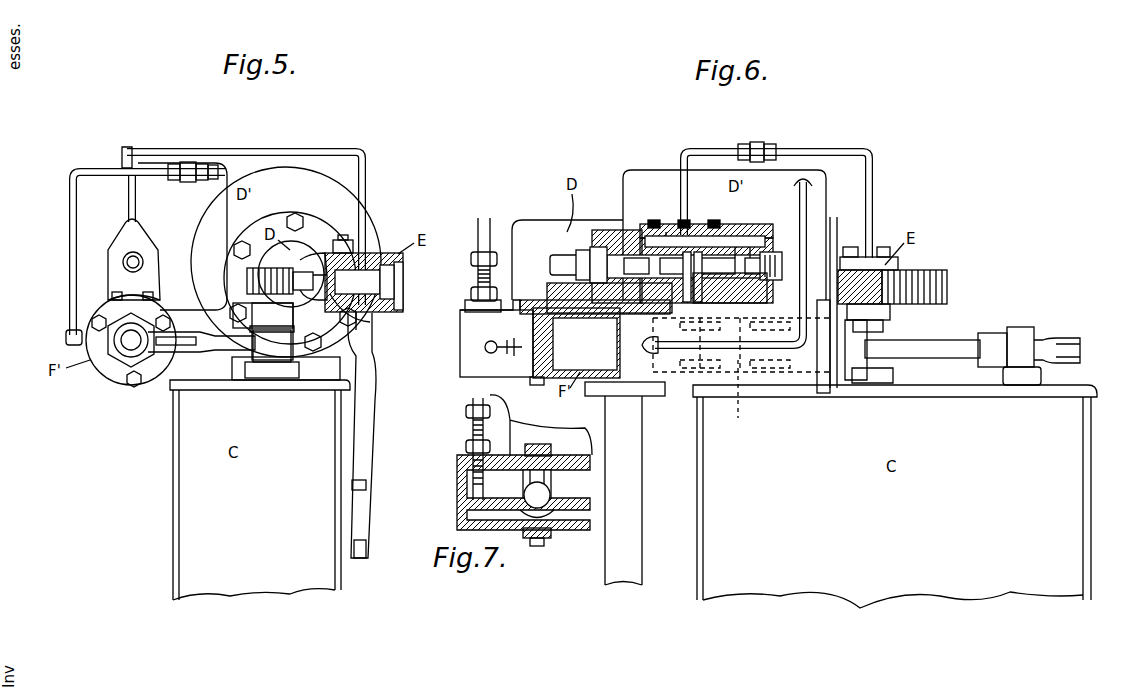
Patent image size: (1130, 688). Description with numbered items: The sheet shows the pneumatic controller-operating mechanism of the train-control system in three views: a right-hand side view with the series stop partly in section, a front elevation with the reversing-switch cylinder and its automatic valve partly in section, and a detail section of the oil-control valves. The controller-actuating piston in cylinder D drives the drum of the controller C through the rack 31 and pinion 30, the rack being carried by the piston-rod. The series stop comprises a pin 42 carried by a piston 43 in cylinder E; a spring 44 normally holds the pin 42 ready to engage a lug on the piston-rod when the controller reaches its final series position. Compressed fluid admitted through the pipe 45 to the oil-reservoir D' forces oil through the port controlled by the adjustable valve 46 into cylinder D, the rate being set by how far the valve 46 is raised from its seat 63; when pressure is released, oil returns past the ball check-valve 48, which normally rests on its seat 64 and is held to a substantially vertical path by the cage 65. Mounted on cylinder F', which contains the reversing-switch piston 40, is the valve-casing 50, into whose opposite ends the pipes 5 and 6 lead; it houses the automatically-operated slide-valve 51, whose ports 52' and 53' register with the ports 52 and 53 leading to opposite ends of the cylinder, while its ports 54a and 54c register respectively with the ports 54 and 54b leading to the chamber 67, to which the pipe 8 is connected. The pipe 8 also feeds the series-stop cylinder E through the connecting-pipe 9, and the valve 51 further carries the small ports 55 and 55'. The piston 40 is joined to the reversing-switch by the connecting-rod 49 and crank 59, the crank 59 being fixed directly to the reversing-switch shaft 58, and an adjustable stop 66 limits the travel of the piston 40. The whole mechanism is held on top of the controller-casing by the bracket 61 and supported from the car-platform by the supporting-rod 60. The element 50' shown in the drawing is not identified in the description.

In FIG. 6, the pipe 5 is at (566, 255).
In FIG. 5, the pipe 6 is at (143, 258).
In FIG. 6, the pipe 6 is at (790, 262).
In FIG. 5, the pipe 8 is at (292, 152).
In FIG. 6, the pipe 8 is at (798, 153).
In FIG. 5, the connecting-pipe 9 is at (366, 190).
In FIG. 6, the connecting-pipe 9 is at (873, 188).
In FIG. 5, the pinion 30 is at (247, 281).
In FIG. 6, the pinion 30 is at (882, 302).
In FIG. 5, the rack 31 is at (360, 332).
In FIG. 6, the rack 31 is at (948, 285).
In FIG. 6, the piston 40 is at (747, 396).
In FIG. 5, the pin 42 is at (372, 312).
In FIG. 5, the piston 43 is at (372, 258).
In FIG. 5, the spring 44 is at (404, 274).
In FIG. 5, the pipe 45 is at (71, 236).
In FIG. 6, the pipe 45 is at (800, 200).
In FIG. 6, the adjustable valve 46 is at (474, 282).
In FIG. 7, the adjustable valve 46 is at (472, 434).
In FIG. 7, the check-valve 48 is at (560, 516).
In FIG. 5, the connecting-rod 49 is at (120, 348).
In FIG. 6, the connecting-rod 49 is at (950, 344).
In FIG. 5, the valve-casing 50 is at (143, 238).
In FIG. 6, the valve body end 50' is at (617, 250).
In FIG. 6, the slide-valve 51 is at (640, 297).
In FIG. 6, the port 52 is at (609, 311).
In FIG. 6, the port 52' is at (691, 250).
In FIG. 6, the port 53 is at (730, 297).
In FIG. 6, the port 53' is at (777, 246).
In FIG. 6, the port 54 is at (654, 222).
In FIG. 6, the port 54a is at (668, 232).
In FIG. 6, the port 54b is at (735, 240).
In FIG. 6, the port 54c is at (750, 244).
In FIG. 6, the small port 55 is at (677, 277).
In FIG. 6, the small port 55' is at (708, 277).
In FIG. 5, the shaft 58 is at (262, 362).
In FIG. 6, the shaft 58 is at (1022, 332).
In FIG. 5, the crank 59 is at (180, 362).
In FIG. 6, the crank 59 is at (1072, 338).
In FIG. 6, the supporting-rod 60 is at (635, 441).
In FIG. 5, the bracket 61 is at (365, 422).
In FIG. 7, the seat 63 is at (462, 492).
In FIG. 7, the seat 64 is at (526, 522).
In FIG. 7, the cage 65 is at (556, 458).
In FIG. 6, the adjustable stop 66 is at (470, 352).
In FIG. 6, the chamber 67 is at (698, 236).